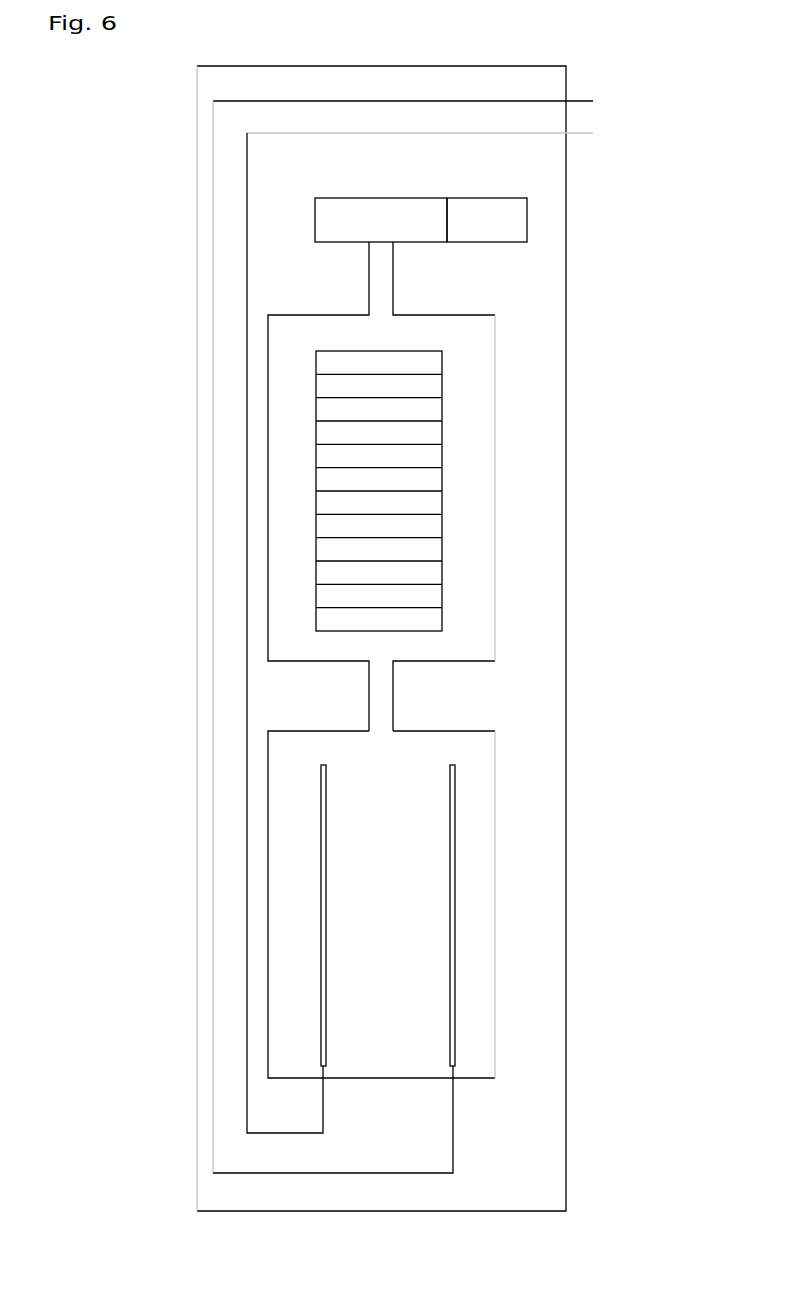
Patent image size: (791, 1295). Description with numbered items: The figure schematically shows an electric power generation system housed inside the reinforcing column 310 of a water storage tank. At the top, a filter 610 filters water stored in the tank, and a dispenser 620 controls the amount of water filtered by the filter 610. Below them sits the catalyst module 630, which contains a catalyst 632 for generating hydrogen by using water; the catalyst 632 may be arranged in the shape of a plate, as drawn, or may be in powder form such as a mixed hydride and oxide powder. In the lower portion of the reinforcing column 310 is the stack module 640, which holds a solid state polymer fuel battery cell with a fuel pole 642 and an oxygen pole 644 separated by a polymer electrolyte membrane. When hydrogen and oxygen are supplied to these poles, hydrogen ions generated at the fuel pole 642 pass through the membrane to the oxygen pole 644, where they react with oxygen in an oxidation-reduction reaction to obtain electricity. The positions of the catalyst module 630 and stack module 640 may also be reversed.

The reinforcing column 310 is at (197, 341).
The filter 610 is at (483, 198).
The dispenser 620 is at (386, 198).
The catalyst module 630 is at (495, 507).
The catalyst 632 is at (405, 350).
The stack module 640 is at (494, 905).
The fuel pole 642 is at (327, 1002).
The oxygen pole 644 is at (453, 1017).